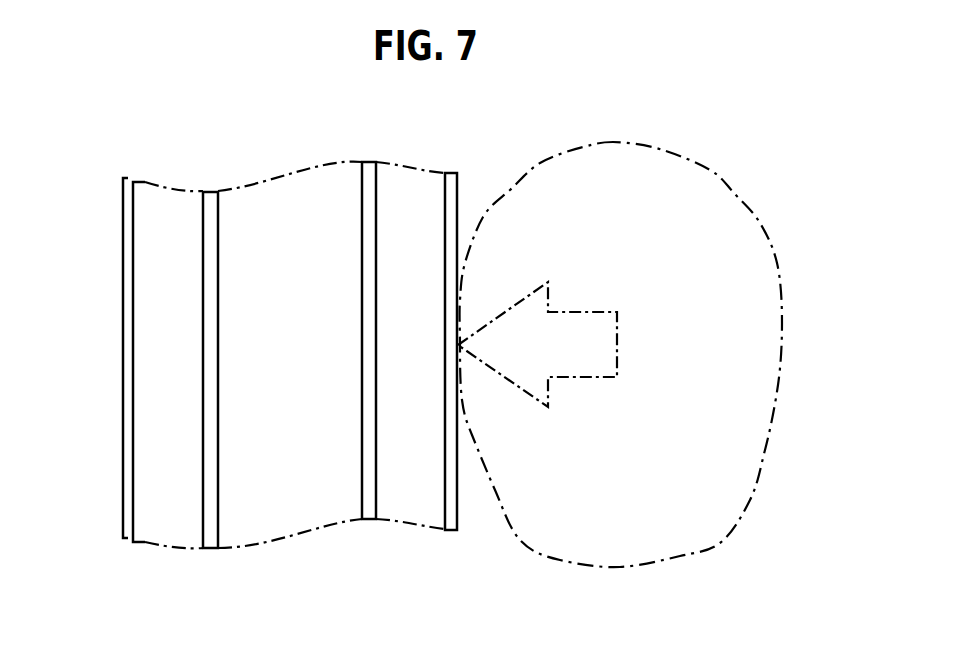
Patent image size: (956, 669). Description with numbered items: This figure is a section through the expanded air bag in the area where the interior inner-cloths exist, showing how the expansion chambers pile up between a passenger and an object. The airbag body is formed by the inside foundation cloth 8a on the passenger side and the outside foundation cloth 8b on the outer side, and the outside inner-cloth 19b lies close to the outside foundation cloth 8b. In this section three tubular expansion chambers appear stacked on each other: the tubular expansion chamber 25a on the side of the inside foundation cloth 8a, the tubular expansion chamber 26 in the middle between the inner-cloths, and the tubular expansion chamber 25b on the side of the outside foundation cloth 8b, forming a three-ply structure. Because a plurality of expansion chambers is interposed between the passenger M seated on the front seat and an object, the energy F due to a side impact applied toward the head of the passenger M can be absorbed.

The inside foundation cloth 8a is at (458, 518).
The outside foundation cloth 8b is at (136, 528).
The outside inner-cloth 19b is at (217, 530).
The tubular expansion chamber 25a is at (433, 360).
The tubular expansion chamber 25b is at (192, 360).
The tubular expansion chamber 26 is at (310, 360).
The passenger M is at (692, 158).
The energy F is at (537, 344).